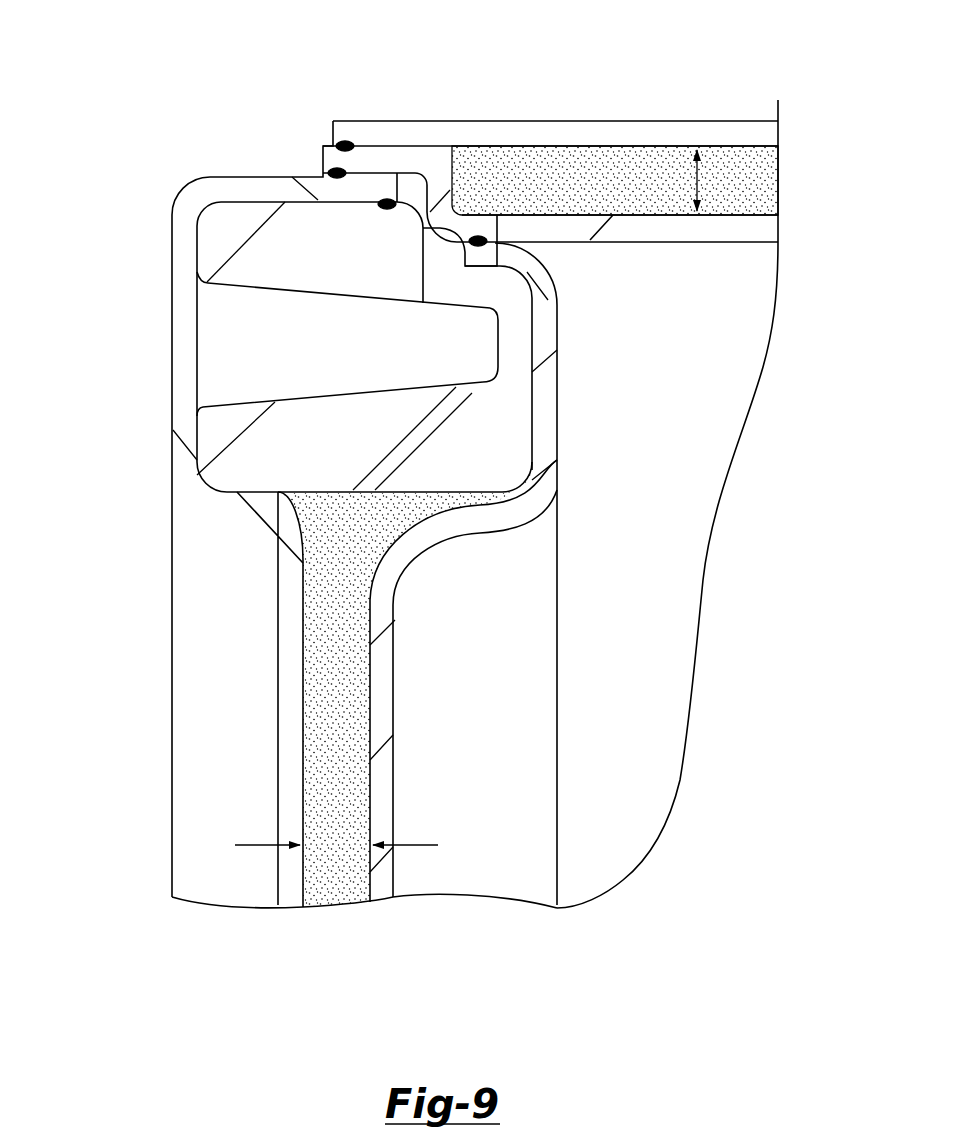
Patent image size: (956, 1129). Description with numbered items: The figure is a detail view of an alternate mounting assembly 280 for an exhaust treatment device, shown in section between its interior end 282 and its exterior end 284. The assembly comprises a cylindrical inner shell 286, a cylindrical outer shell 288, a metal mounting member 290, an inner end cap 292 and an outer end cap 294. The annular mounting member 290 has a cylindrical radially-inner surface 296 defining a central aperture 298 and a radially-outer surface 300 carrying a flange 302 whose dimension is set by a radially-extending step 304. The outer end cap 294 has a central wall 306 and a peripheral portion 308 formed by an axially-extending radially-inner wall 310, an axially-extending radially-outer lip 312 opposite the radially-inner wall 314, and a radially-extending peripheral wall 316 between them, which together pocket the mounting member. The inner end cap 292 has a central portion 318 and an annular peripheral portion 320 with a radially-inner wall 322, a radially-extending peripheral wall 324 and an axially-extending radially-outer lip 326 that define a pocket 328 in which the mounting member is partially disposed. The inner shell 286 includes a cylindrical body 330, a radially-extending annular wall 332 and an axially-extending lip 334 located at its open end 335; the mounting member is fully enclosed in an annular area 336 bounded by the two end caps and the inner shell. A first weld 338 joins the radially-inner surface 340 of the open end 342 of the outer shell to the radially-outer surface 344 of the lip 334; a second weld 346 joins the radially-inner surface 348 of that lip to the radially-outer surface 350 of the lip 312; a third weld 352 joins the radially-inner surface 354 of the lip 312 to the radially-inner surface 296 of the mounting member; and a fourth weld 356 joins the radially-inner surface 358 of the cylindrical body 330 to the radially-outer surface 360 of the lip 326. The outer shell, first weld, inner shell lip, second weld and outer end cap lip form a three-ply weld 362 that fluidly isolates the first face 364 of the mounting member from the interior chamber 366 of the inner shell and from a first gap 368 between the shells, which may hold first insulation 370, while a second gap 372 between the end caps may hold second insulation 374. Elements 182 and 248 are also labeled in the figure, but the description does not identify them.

The adhesive layer 182 is at (277, 525).
The housing 248 is at (487, 875).
The mounting assembly 280 is at (208, 212).
The interior end 282 is at (82, 180).
The exterior end 284 is at (770, 420).
The cylindrical inner shell 286 is at (722, 228).
The cylindrical outer shell 288 is at (603, 162).
The metal mounting member 290 is at (243, 463).
The inner end cap 292 is at (383, 685).
The outer end cap 294 is at (288, 677).
The radially-inner surface 296 is at (447, 492).
The central aperture 298 is at (487, 750).
The radially-outer surface 300 is at (503, 225).
The flange 302 is at (275, 262).
The radially-extending step 304 is at (440, 235).
The central wall 306 is at (278, 808).
The peripheral portion 308 is at (180, 316).
The axially-extending radially-inner wall 310 is at (210, 507).
The axially-extending radially-outer lip 312 is at (245, 190).
The radially-inner wall 314 is at (177, 340).
The radially-extending peripheral wall 316 is at (200, 348).
The central portion 318 is at (383, 818).
The annular peripheral portion 320 is at (562, 364).
The radially-inner wall 322 is at (488, 518).
The radially-extending peripheral wall 324 is at (540, 422).
The axially-extending radially-outer lip 326 is at (457, 250).
The pocket 328 is at (528, 335).
The cylindrical body 330 is at (758, 228).
The radially-extending annular wall 332 is at (433, 193).
The axially-extending lip 334 is at (380, 160).
The open end 335 is at (323, 146).
The annular area 336 is at (370, 520).
The first weld 338 is at (345, 142).
The radially-inner surface 340 is at (616, 162).
The open end 342 is at (331, 115).
The radially-outer surface 344 is at (392, 160).
The second weld 346 is at (337, 180).
The radially-inner surface 348 is at (343, 215).
The radially-outer surface 350 is at (232, 175).
The third weld 352 is at (387, 212).
The radially-inner surface 354 is at (180, 228).
The fourth weld 356 is at (480, 236).
The radially-inner surface 358 is at (750, 242).
The radially-outer surface 360 is at (513, 226).
The three-ply weld 362 is at (398, 216).
The first face 364 is at (195, 428).
The interior chamber 366 is at (566, 325).
The first gap 368 is at (707, 187).
The first insulation 370 is at (567, 170).
The second gap 372 is at (337, 845).
The second insulation 374 is at (340, 742).